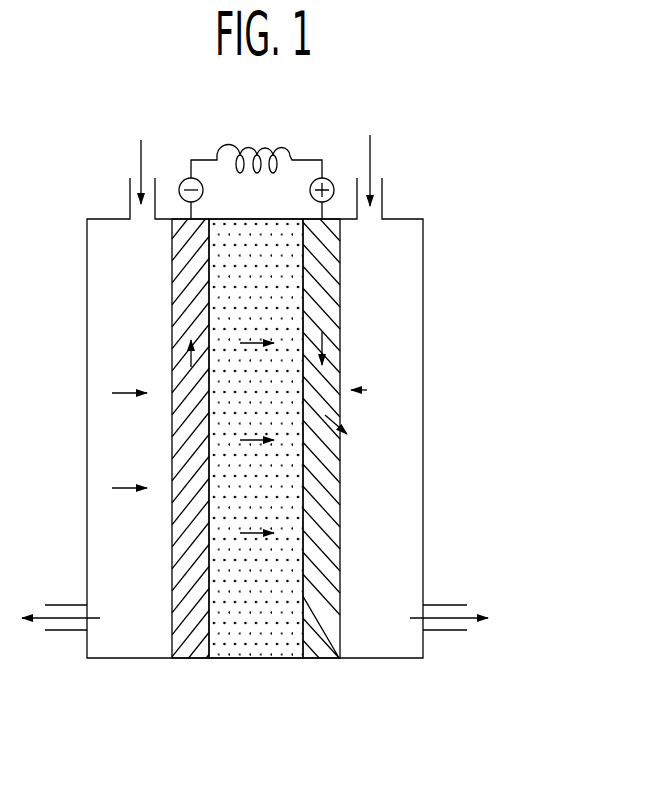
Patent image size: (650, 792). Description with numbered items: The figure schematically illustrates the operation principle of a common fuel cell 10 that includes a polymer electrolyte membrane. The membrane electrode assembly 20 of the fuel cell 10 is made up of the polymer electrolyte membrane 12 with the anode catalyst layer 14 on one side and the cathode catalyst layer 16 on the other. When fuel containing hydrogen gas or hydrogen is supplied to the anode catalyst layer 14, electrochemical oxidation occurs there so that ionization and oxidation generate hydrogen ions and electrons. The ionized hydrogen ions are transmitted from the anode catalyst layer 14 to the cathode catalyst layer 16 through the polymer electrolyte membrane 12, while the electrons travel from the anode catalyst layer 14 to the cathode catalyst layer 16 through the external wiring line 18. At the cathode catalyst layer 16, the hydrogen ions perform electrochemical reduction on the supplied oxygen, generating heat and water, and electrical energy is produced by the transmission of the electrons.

The fuel cell 10 is at (445, 301).
The polymer electrolyte membrane 12 is at (256, 652).
The anode catalyst layer 14 is at (193, 652).
The cathode catalyst layer 16 is at (321, 474).
The external wiring line 18 is at (203, 157).
The membrane electrode assembly 20 is at (253, 497).